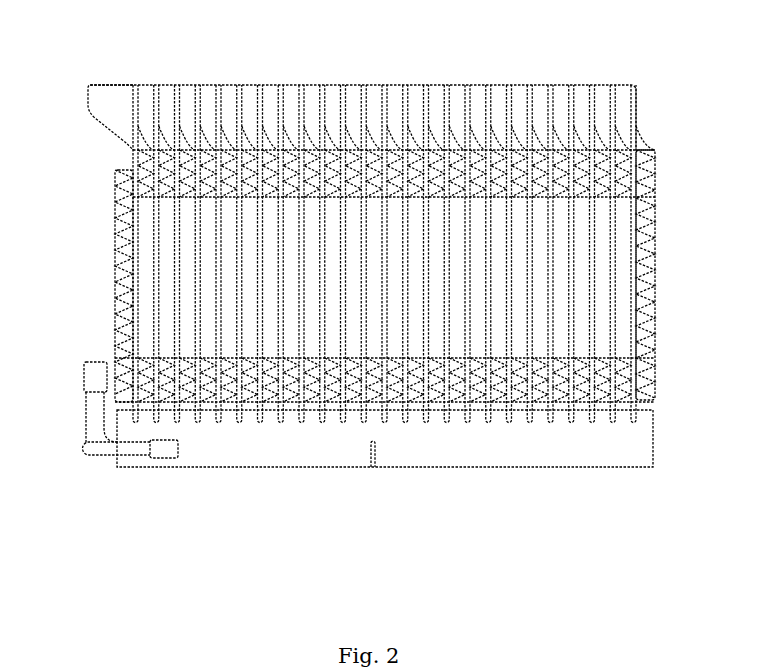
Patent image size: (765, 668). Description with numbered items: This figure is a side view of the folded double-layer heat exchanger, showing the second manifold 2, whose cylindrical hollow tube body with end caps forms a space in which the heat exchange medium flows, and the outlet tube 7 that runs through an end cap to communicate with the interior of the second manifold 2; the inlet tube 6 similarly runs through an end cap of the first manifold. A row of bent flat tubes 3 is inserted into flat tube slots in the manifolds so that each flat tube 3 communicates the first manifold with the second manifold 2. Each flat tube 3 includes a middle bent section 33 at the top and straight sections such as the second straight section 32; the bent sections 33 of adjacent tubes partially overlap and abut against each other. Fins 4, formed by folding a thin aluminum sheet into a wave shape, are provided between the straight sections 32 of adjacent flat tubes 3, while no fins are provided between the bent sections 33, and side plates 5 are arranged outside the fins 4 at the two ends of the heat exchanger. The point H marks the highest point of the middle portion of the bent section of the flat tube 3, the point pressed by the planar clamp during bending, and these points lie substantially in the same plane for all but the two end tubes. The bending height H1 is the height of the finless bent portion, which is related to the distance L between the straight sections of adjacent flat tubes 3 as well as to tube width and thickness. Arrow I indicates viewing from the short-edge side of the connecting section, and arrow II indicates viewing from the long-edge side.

The second manifold 2 is at (333, 460).
The bent flat tube 3 is at (297, 88).
The fins 4 is at (648, 372).
The side plates 5 is at (115, 263).
The inlet tube 6 is at (96, 420).
The outlet tube 7 is at (108, 448).
The second straight section 32 is at (131, 214).
The bent section 33 is at (121, 89).
The highest point H is at (480, 85).
The bending height H1 is at (637, 85).
The distance between straight sections of adjacent flat tubes L is at (262, 303).
The arrow I is at (80, 94).
The arrow II is at (677, 98).